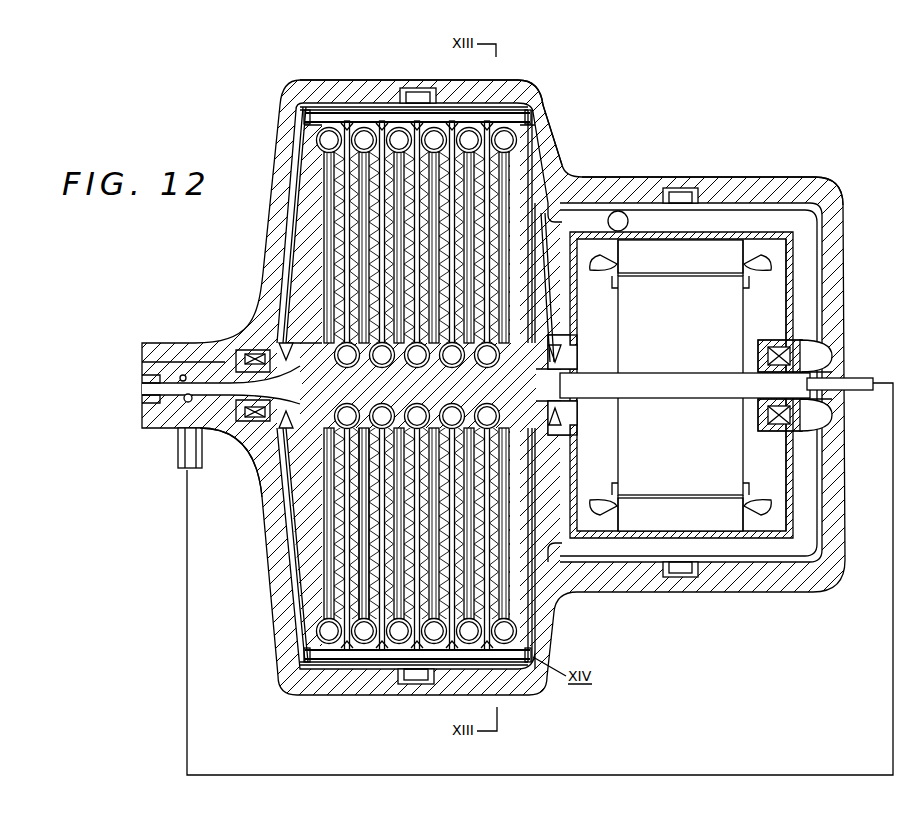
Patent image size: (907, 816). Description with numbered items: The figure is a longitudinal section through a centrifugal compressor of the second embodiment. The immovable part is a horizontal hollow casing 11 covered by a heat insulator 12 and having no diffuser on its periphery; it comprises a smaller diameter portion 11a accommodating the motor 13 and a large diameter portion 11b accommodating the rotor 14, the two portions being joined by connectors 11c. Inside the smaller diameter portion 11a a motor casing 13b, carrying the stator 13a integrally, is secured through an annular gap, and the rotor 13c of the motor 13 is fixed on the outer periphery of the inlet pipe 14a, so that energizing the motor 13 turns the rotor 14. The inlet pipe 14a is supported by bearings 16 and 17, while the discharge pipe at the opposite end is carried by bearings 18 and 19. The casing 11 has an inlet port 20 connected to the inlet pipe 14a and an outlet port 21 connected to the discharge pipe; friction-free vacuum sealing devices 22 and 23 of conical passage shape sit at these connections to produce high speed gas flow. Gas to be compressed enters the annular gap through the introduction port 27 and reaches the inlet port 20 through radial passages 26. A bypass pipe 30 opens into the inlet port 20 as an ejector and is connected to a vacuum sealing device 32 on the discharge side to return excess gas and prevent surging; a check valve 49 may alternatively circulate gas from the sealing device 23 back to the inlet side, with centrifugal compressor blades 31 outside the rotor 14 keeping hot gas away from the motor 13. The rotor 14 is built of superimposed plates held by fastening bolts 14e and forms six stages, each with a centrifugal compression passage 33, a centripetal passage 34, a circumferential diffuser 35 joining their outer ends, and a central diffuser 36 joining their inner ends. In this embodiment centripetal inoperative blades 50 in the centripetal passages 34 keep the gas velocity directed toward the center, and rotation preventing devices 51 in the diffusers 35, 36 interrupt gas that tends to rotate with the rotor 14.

The casing 11 is at (692, 74).
The smaller diameter portion 11a is at (785, 165).
The large diameter portion 11b is at (543, 85).
The connectors 11c is at (418, 88).
The heat insulator 12 is at (505, 92).
The motor 13 is at (777, 230).
The stator 13a is at (700, 268).
The motor casing 13b is at (790, 238).
The rotor of the motor 13c is at (726, 475).
The rotor 14 is at (300, 133).
The inlet pipe 14a is at (669, 372).
The fastening bolts 14e is at (325, 106).
The bearing 16 is at (572, 330).
The bearing 17 is at (776, 368).
The bearing 18 is at (273, 338).
The bearing 19 is at (233, 342).
The inlet port 20 is at (843, 350).
The outlet port 21 is at (150, 388).
The vacuum sealing device 22 is at (722, 398).
The vacuum sealing device 23 is at (243, 432).
The radial passages 26 is at (813, 422).
The introduction port 27 is at (631, 187).
The bypass pipe 30 is at (853, 380).
The centrifugal compressor blades 31 is at (562, 236).
The vacuum sealing device 32 is at (187, 402).
The centrifugal compression passage 33 is at (327, 207).
The centripetal passage 34 is at (312, 226).
The circumferential diffuser 35 is at (363, 637).
The central diffuser 36 is at (580, 455).
The check valve 49 is at (590, 614).
The centripetal inoperative blades 50 is at (442, 658).
The rotation preventing devices 51 is at (279, 343).